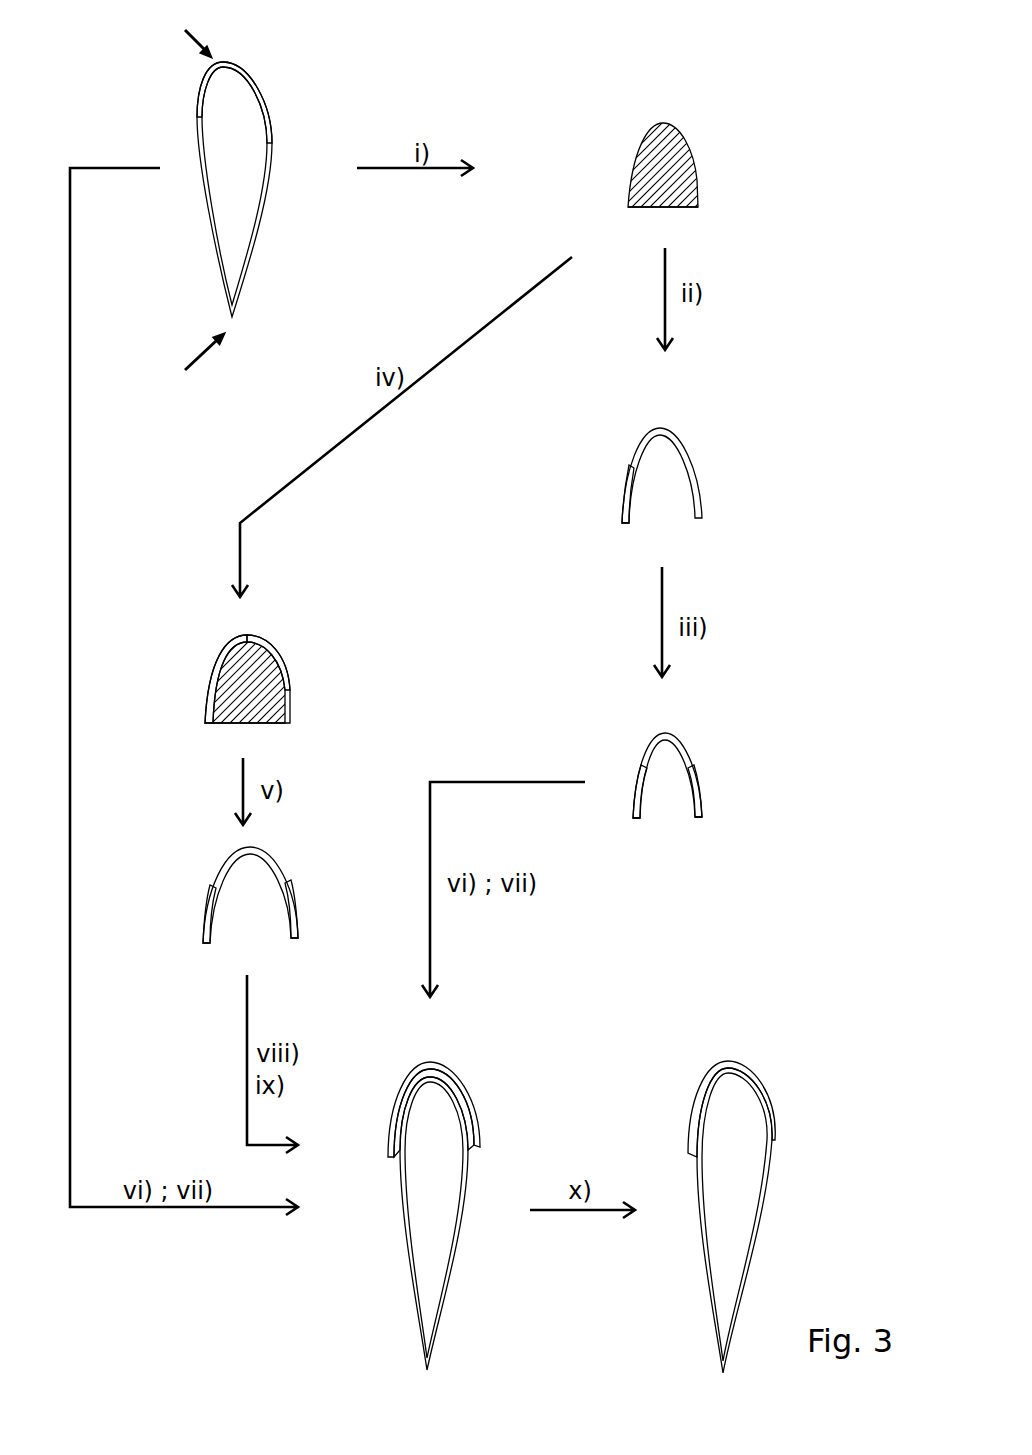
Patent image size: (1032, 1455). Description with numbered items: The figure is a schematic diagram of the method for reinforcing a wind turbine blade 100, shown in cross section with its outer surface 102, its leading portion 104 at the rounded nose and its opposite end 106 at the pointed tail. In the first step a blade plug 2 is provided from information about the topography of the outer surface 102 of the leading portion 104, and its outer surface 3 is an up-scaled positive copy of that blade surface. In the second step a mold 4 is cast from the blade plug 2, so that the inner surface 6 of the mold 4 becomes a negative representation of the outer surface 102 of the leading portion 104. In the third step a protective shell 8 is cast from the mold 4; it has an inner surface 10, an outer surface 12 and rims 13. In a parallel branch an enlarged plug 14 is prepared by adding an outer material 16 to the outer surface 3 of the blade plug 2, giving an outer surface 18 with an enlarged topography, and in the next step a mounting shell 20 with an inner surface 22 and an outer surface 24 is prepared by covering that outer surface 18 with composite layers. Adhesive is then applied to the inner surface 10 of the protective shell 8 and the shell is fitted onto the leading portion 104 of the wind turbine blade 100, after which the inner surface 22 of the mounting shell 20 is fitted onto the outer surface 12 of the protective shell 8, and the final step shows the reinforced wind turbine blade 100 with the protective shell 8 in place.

The wind turbine blade 100 is at (243, 217).
The outer surface of the wind turbine blade 102 is at (267, 107).
The leading portion of the wind turbine blade 104 is at (179, 29).
The trailing edge 106 is at (187, 371).
The blade plug 2 is at (678, 153).
The outer surface of the blade plug 3 is at (698, 185).
The mold 4 is at (690, 450).
The inner surface of the mold 6 is at (627, 490).
The protective shell 8 is at (690, 742).
The inner surface of the protective shell 10 is at (640, 788).
The outer surface of the protective shell 12 is at (700, 778).
The rims of the protective shell 13 is at (632, 820).
The enlarged plug 14 is at (290, 690).
The outer material 16 is at (268, 645).
The outer surface of the enlarged plug 18 is at (233, 635).
The mounting shell 20 is at (282, 868).
The inner surface of the mounting shell 22 is at (208, 918).
The outer surface of intermediate shell 24 is at (297, 898).